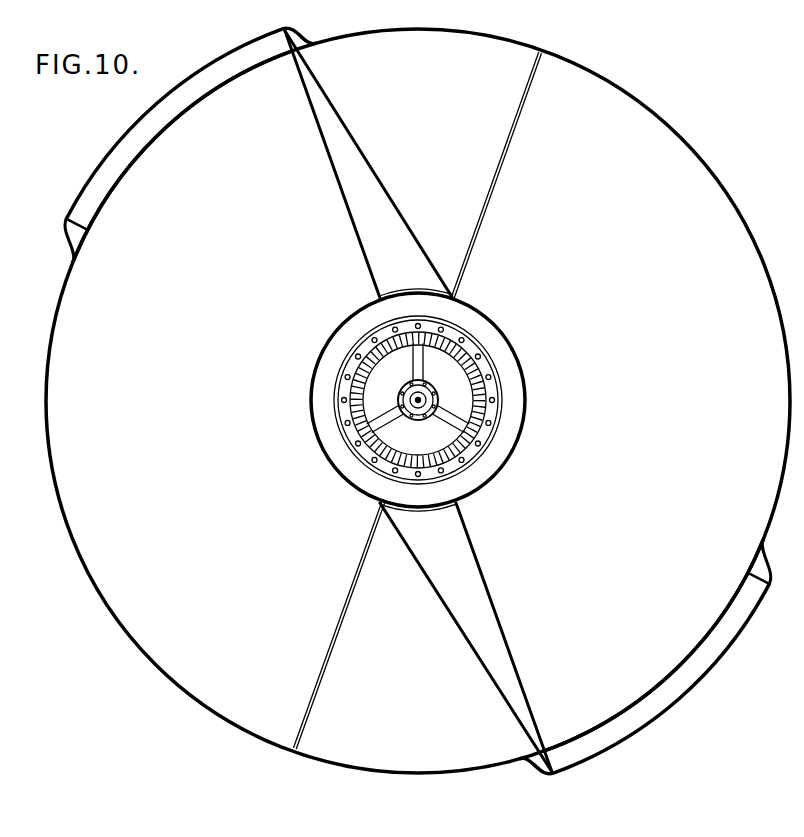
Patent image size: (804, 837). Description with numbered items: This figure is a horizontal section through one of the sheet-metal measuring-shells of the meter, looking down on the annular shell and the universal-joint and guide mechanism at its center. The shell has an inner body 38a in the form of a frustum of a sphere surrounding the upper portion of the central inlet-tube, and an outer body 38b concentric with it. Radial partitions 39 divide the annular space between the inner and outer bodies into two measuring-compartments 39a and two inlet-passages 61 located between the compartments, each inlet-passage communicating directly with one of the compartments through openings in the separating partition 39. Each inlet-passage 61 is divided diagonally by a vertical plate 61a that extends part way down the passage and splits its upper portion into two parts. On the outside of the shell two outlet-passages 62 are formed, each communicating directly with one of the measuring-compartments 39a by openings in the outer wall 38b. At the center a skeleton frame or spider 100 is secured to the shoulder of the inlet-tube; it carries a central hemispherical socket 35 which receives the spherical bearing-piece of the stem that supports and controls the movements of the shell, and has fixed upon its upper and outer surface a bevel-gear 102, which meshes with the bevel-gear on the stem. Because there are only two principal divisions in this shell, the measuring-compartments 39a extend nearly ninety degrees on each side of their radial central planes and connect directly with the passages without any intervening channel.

The central hemispherical socket 35 is at (410, 395).
The inner body 38a is at (394, 400).
The outer body 38b is at (418, 400).
The radial partition 39 is at (505, 601).
The measuring-compartment 39a is at (418, 401).
The inlet-passage 61 is at (418, 401).
The vertical plate 61a is at (404, 215).
The outlet-passage 62 is at (418, 401).
The skeleton frame or spider 100 is at (422, 368).
The bevel-gear 102 is at (418, 400).